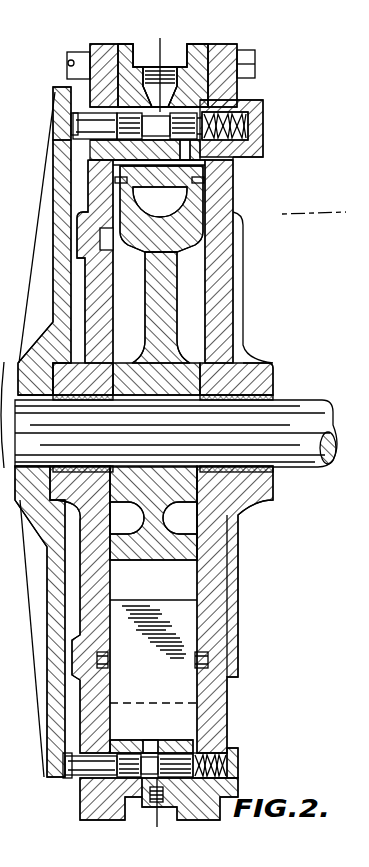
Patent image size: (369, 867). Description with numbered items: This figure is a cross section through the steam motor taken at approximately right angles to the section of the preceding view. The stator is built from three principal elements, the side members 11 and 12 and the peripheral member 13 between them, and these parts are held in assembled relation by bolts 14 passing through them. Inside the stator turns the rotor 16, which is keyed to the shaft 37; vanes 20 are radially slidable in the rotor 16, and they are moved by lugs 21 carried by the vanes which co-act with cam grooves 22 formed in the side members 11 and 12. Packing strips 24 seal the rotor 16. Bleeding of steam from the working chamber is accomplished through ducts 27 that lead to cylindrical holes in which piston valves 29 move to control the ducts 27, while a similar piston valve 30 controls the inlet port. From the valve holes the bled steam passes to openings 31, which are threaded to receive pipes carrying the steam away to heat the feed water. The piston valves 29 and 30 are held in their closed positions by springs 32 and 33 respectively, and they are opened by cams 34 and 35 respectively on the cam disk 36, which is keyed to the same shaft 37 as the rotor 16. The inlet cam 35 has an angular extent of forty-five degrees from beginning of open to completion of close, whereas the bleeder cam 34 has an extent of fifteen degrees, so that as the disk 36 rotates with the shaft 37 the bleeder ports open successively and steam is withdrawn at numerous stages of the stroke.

The side member 11 is at (85, 713).
The side member 12 is at (212, 706).
The peripheral member 13 is at (112, 818).
The bolts 14 is at (255, 64).
The rotor 16 is at (150, 296).
The vanes 20 is at (153, 654).
The lugs 21 is at (210, 660).
The cam grooves 22 is at (233, 224).
The packing strips for rotor 24 is at (203, 179).
The ducts 27 is at (150, 747).
The piston valves 29 is at (218, 742).
The piston valve 30 is at (218, 93).
The openings 31 is at (160, 812).
The springs 32 is at (233, 761).
The springs 33 is at (263, 127).
The cams 34 is at (68, 780).
The cams 35 is at (55, 105).
The cam disk 36 is at (53, 248).
The shaft 37 is at (292, 418).